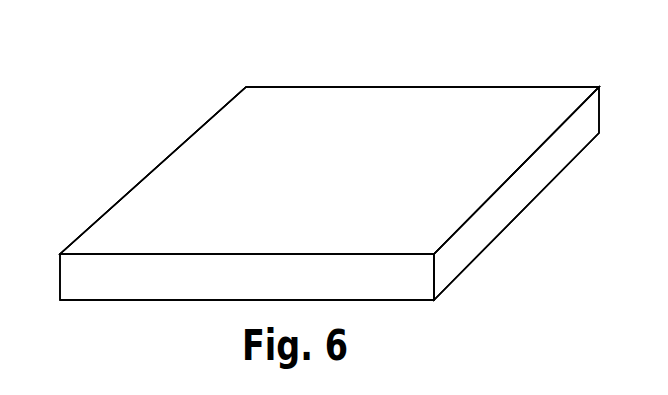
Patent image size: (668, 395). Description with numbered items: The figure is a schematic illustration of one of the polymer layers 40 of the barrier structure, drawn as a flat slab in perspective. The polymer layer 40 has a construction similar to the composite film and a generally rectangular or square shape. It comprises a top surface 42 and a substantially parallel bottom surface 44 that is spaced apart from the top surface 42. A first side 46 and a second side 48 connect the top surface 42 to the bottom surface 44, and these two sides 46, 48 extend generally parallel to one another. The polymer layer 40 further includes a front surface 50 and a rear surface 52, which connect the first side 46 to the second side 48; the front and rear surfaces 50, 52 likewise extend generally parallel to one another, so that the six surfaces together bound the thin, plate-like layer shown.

The polymer layer 40 is at (170, 110).
The top surface 42 is at (489, 132).
The bottom surface 44 is at (369, 302).
The first side 46 is at (98, 215).
The second side 48 is at (506, 203).
The front surface 50 is at (180, 283).
The rear surface 52 is at (394, 86).